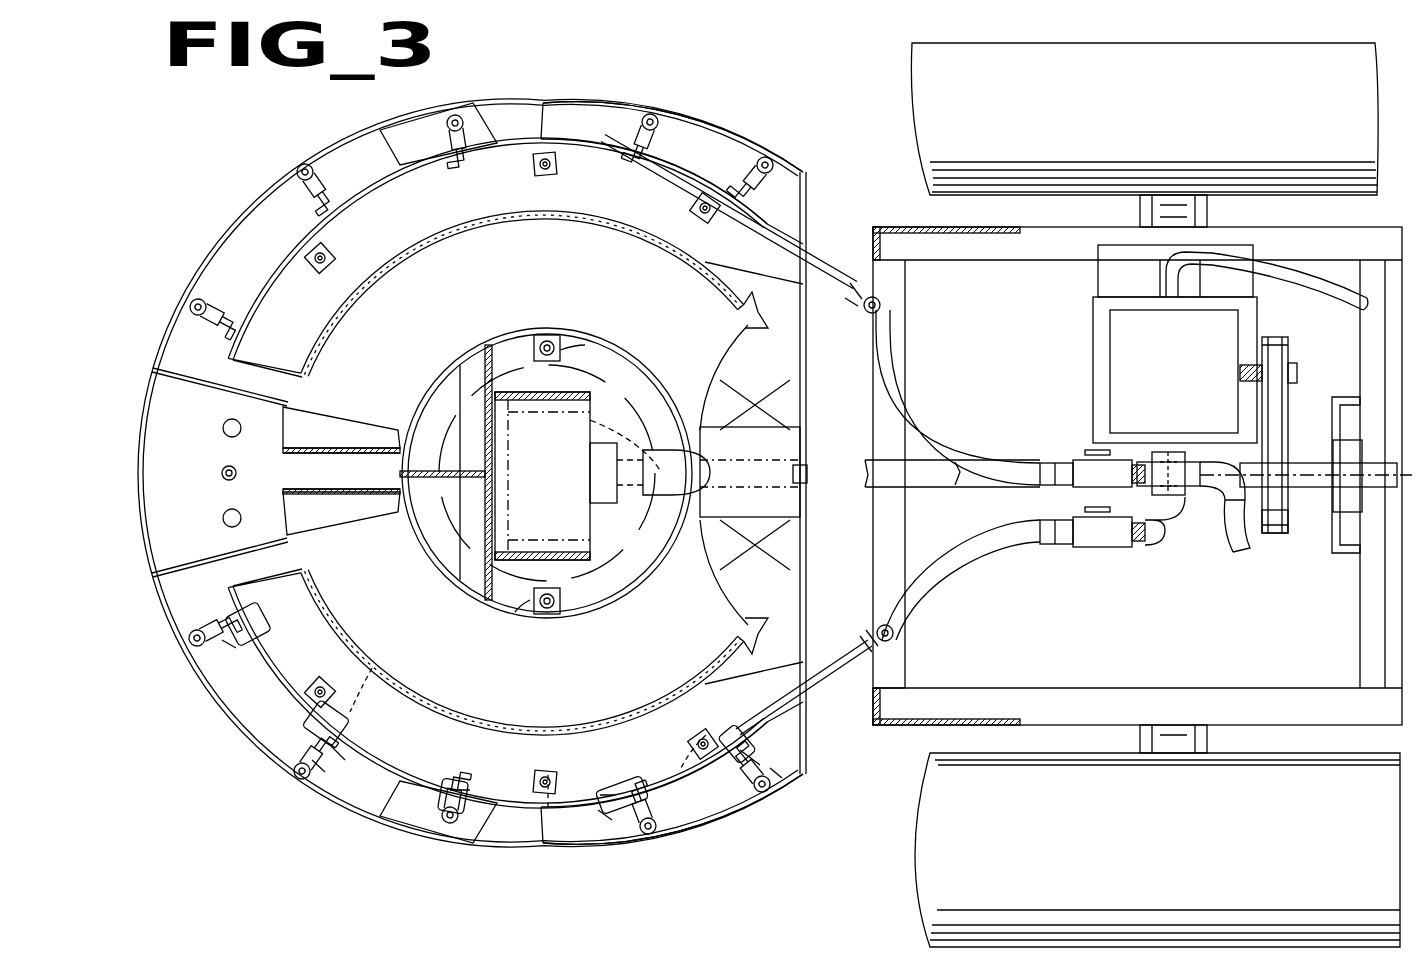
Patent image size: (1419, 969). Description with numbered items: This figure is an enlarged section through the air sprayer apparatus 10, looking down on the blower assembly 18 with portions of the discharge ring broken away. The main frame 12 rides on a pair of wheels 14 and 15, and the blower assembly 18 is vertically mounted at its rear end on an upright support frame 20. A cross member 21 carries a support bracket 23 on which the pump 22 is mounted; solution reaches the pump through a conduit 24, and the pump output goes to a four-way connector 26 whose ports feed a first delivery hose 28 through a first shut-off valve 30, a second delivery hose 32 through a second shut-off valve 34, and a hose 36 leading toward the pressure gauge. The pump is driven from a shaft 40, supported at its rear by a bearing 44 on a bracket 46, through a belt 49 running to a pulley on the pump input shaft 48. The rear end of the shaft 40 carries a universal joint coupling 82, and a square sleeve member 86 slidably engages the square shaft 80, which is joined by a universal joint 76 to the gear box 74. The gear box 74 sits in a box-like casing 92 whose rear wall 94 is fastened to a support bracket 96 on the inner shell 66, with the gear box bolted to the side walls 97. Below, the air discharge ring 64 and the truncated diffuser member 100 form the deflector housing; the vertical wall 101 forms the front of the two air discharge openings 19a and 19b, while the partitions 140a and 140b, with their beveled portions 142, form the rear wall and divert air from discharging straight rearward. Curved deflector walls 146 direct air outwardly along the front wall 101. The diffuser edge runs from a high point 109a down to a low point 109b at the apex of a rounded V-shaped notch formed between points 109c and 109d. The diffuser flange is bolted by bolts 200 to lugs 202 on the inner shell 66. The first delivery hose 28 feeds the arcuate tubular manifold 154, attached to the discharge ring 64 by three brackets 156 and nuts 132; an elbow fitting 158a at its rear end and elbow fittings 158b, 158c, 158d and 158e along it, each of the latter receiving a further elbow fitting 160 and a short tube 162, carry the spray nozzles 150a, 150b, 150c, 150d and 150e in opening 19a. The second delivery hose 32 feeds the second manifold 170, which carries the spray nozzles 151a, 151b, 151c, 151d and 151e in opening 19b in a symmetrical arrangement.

The air sprayer apparatus 10 is at (245, 133).
The main frame 12 is at (996, 258).
The wheel 14 is at (1188, 107).
The wheel 15 is at (1178, 843).
The blower assembly 18 is at (235, 225).
The air discharge opening 19a is at (272, 738).
The air discharge opening 19b is at (365, 158).
The upright support frame 20 is at (905, 724).
The cross member 21 is at (1200, 600).
The pump 22 is at (1188, 367).
The support bracket 23 is at (1098, 280).
The conduit 24 is at (1335, 290).
The four-way connector 26 is at (1160, 455).
The first delivery hose 28 is at (935, 570).
The first shut-off valve 30 is at (1075, 548).
The second delivery hose 32 is at (895, 410).
The second shut-off valve 34 is at (1080, 462).
The hose 36 is at (1238, 550).
The shaft 40 is at (1370, 465).
The bearing 44 is at (1338, 500).
The bracket 46 is at (1348, 396).
The input shaft 48 is at (1292, 368).
The belt 49 is at (1284, 528).
The air discharge ring 64 is at (582, 222).
The inner shell 66 is at (410, 402).
The gear box 74 is at (645, 430).
The universal joint 76 is at (673, 528).
The shaft 80 is at (806, 447).
The universal joint coupling 82 is at (1225, 455).
The square sleeve member 86 is at (950, 488).
The box-like casing 92 is at (605, 398).
The rear wall 94 is at (500, 455).
The support bracket 96 is at (490, 350).
The side walls 97 is at (585, 392).
The diffuser member 100 is at (703, 128).
The vertical wall 101 is at (806, 548).
The high point 109a is at (138, 468).
The low point 109b is at (522, 150).
The point 109c is at (478, 105).
The point 109d is at (555, 100).
The nuts 132 is at (392, 652).
The partition 140a is at (295, 535).
The partition 140b is at (295, 408).
The beveled portion 142 is at (337, 450).
The deflector walls 146 is at (790, 340).
The spray nozzle 150a is at (188, 638).
The spray nozzle 150b is at (296, 776).
The spray nozzle 150c is at (443, 810).
The spray nozzle 150d is at (648, 834).
The spray nozzle 150e is at (772, 786).
The spray nozzle 151a is at (190, 305).
The spray nozzle 151b is at (297, 171).
The spray nozzle 151c is at (450, 116).
The spray nozzle 151d is at (653, 114).
The spray nozzle 151e is at (775, 160).
The tubular manifold 154 is at (810, 690).
The brackets 156 is at (320, 682).
The elbow fitting 158a is at (240, 612).
The elbow fitting 158b is at (330, 714).
The elbow fitting 158c is at (447, 785).
The elbow fitting 158d is at (603, 786).
The elbow fitting 158e is at (738, 775).
The elbow fitting 160 is at (345, 748).
The short tube 162 is at (240, 657).
The second manifold 170 is at (822, 265).
The bolts 200 is at (548, 335).
The lugs 202 is at (562, 350).